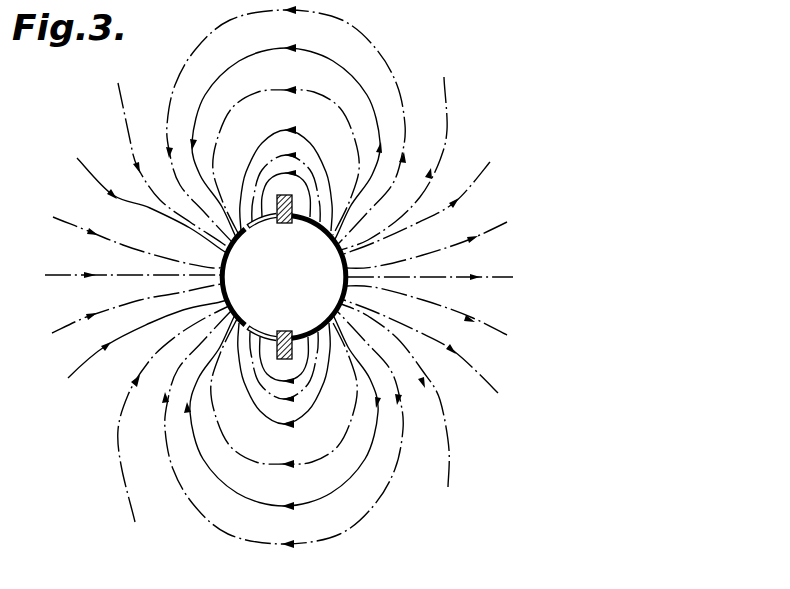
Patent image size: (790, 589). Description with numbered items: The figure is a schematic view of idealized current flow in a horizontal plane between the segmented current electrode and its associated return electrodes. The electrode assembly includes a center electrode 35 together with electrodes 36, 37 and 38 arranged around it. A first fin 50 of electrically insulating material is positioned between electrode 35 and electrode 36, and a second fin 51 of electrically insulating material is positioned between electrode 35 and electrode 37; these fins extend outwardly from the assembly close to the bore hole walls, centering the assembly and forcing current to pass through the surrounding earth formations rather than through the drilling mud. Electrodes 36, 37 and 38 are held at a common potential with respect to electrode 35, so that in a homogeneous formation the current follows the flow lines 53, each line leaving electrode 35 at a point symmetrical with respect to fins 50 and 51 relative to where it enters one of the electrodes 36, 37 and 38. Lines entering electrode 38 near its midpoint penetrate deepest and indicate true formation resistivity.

The electrode 35 is at (345, 277).
The electrode 36 is at (256, 223).
The electrode 37 is at (253, 330).
The electrode 38 is at (225, 278).
The first fin 50 is at (290, 223).
The second fin 51 is at (288, 331).
The flow lines 53 is at (131, 223).